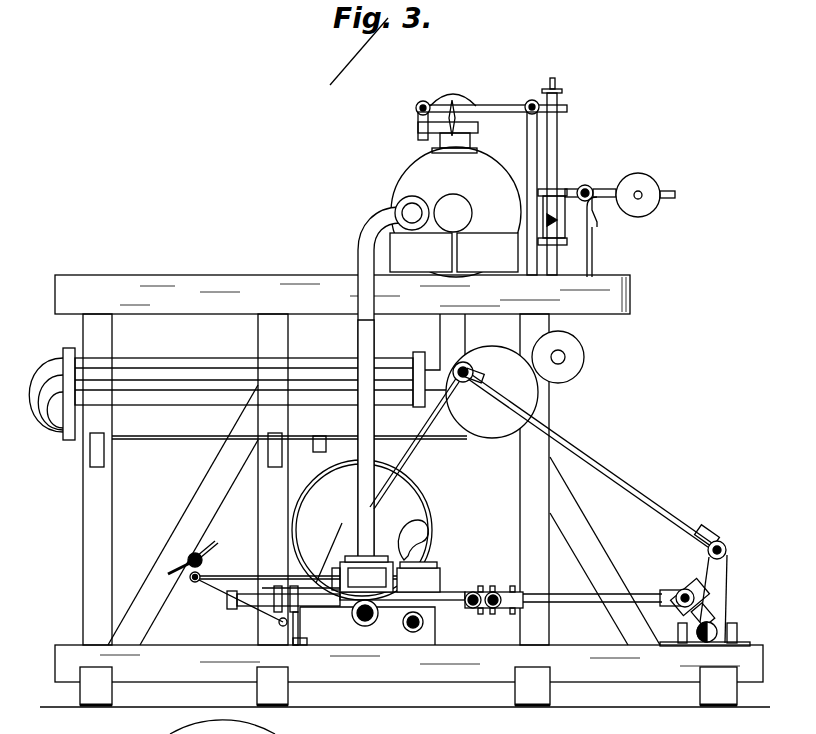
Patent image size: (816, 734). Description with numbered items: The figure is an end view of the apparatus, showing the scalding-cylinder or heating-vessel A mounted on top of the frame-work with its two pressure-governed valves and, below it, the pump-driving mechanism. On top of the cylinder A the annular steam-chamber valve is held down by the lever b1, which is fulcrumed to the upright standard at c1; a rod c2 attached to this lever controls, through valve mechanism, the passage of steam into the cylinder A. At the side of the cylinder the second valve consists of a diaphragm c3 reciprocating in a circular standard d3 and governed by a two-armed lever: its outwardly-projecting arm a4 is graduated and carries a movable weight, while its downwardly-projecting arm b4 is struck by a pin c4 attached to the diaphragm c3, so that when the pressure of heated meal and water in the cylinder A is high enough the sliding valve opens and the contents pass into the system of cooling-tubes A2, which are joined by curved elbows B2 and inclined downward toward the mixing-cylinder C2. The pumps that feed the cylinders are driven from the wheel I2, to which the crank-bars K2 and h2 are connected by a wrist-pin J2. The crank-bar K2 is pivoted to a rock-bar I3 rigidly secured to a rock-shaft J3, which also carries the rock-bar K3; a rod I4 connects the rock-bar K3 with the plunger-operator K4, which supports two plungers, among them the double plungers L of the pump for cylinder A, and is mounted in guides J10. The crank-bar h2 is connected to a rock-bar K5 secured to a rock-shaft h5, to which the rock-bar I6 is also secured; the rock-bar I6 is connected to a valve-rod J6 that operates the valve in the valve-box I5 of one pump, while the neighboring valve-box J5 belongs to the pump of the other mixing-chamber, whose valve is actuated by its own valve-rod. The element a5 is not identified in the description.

The scalding-cylinder A is at (455, 199).
The lever b1 is at (492, 112).
The fulcrum c1 is at (427, 113).
The rod c2 is at (538, 193).
The circular standard d3 is at (527, 203).
The pin c4 is at (563, 242).
The pivot eye a5 is at (579, 183).
The outwardly-projecting arm a4 is at (634, 193).
The diaphragm c3 is at (596, 210).
The downwardly-projecting arm b4 is at (592, 248).
The cooling-tubes A2 is at (270, 370).
The curved elbows B2 is at (52, 394).
The mixing-cylinder C2 is at (362, 530).
The wheel I2 is at (492, 392).
The wrist-pin J2 is at (469, 356).
The crank-bar h2 is at (417, 440).
The crank-bar K2 is at (593, 464).
The guides J10 is at (298, 626).
The plunger-operator K4 is at (268, 605).
The double plungers L is at (392, 593).
The rock-bar K5 is at (293, 563).
The rock-bar I6 is at (177, 566).
The rock-shaft h5 is at (211, 542).
The valve-box I5 is at (366, 574).
The valve-rod J6 is at (268, 560).
The valve-box J5 is at (418, 577).
The rod I4 is at (602, 593).
The rock-bar K3 is at (693, 595).
The rock-bar I3 is at (713, 599).
The rock-shaft J3 is at (705, 634).